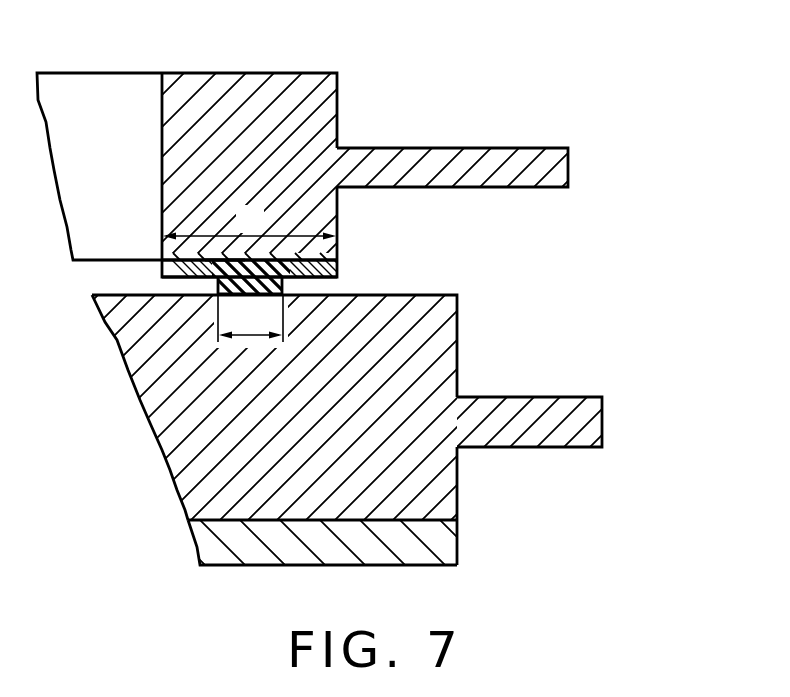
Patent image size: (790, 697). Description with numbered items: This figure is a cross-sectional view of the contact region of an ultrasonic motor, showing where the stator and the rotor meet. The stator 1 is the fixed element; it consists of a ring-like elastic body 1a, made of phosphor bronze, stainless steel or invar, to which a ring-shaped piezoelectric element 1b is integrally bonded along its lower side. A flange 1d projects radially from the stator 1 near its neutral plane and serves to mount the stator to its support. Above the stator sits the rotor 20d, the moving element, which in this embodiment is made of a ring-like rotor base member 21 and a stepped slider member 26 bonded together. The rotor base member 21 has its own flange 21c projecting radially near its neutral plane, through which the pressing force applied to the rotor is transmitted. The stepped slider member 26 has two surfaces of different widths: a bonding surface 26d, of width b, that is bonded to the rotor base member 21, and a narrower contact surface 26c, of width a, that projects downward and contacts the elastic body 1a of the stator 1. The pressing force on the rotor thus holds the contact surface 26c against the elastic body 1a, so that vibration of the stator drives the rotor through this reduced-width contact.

The stator 1 is at (395, 348).
The elastic body 1a is at (415, 345).
The piezoelectric element 1b is at (683, 305).
The flange 1d is at (580, 408).
The rotor 20d is at (374, 348).
The rotor base member 21 is at (278, 80).
The flange 21c is at (507, 157).
The stepped slider member 26 is at (338, 270).
The contact surface 26c is at (265, 297).
The bonding surface 26d is at (243, 262).